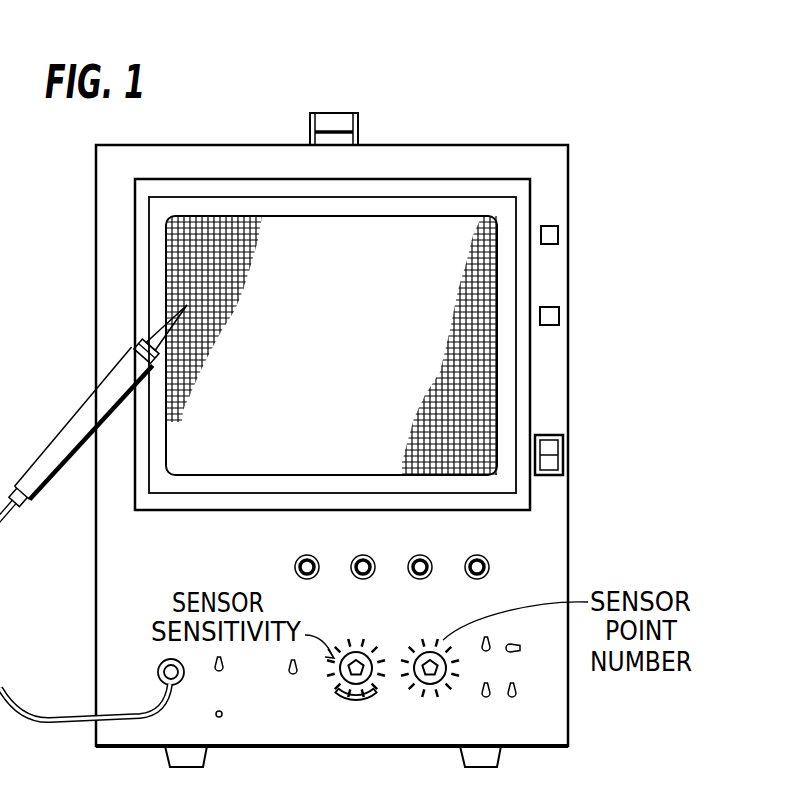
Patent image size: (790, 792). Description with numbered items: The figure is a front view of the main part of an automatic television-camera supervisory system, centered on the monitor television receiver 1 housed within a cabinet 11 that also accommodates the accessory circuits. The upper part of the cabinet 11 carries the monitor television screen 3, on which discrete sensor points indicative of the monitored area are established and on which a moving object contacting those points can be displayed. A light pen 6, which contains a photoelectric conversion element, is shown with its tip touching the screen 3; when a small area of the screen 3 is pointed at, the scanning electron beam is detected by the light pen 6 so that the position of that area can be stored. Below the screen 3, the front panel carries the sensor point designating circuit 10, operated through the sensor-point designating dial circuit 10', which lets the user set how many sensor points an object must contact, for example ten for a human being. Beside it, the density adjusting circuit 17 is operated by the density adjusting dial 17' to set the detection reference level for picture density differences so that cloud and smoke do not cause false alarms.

The monitor television receiver 1 is at (342, 353).
The monitor television screen 3 is at (402, 235).
The light pen 6 is at (57, 445).
The cabinet 11 is at (110, 590).
The density adjusting circuit 17 is at (356, 649).
The density adjusting dial 17' is at (347, 740).
The sensor point designating circuit 10 is at (430, 645).
The sensor-point designating dial circuit 10' is at (422, 740).